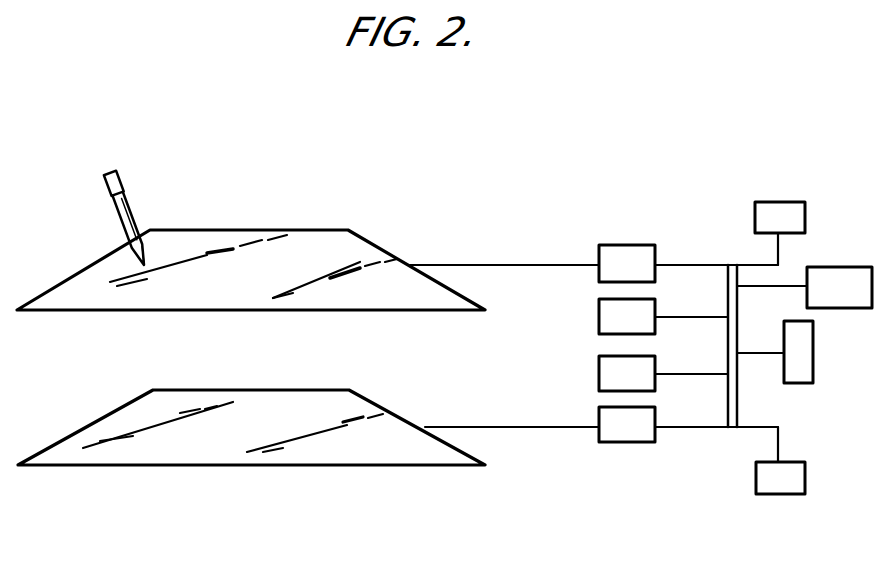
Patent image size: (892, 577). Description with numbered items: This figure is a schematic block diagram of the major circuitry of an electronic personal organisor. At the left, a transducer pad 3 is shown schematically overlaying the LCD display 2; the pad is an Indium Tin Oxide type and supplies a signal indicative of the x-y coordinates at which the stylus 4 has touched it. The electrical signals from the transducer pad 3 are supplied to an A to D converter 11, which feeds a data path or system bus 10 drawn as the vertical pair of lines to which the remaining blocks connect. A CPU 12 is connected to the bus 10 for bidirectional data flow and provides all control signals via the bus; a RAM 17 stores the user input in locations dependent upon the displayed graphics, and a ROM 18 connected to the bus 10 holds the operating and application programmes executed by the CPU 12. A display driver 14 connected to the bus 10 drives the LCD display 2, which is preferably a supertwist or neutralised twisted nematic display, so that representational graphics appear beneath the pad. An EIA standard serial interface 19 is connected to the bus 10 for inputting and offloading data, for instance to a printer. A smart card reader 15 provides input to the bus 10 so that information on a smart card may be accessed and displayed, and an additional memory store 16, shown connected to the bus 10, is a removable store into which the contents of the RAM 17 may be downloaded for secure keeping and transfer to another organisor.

The LCD display 2 is at (233, 398).
The transducer pad 3 is at (310, 237).
The stylus 4 is at (130, 187).
The system bus 10 is at (736, 405).
The A to D converter 11 is at (618, 252).
The CPU 12 is at (803, 350).
The display driver 14 is at (615, 433).
The smart card reader 15 is at (772, 203).
The additional memory store 16 is at (783, 487).
The RAM 17 is at (597, 312).
The ROM 18 is at (598, 372).
The serial interface 19 is at (837, 273).